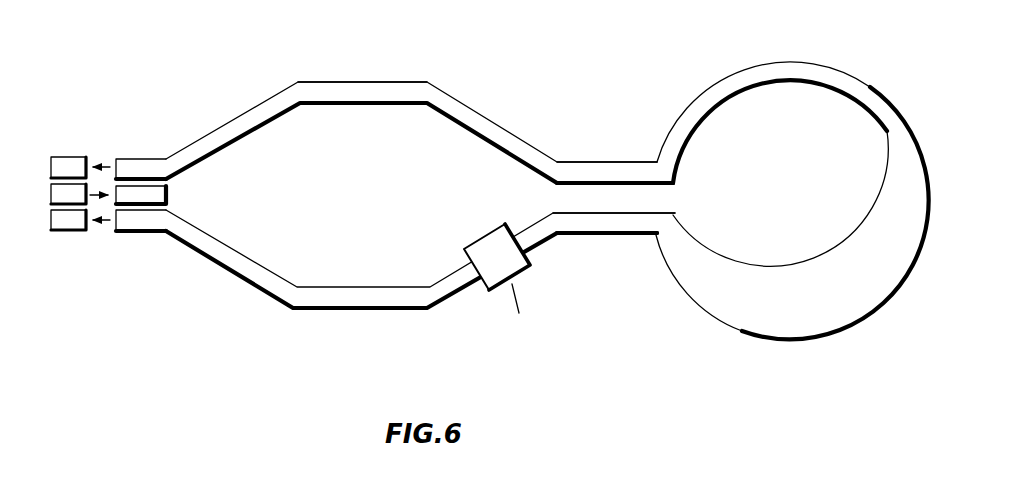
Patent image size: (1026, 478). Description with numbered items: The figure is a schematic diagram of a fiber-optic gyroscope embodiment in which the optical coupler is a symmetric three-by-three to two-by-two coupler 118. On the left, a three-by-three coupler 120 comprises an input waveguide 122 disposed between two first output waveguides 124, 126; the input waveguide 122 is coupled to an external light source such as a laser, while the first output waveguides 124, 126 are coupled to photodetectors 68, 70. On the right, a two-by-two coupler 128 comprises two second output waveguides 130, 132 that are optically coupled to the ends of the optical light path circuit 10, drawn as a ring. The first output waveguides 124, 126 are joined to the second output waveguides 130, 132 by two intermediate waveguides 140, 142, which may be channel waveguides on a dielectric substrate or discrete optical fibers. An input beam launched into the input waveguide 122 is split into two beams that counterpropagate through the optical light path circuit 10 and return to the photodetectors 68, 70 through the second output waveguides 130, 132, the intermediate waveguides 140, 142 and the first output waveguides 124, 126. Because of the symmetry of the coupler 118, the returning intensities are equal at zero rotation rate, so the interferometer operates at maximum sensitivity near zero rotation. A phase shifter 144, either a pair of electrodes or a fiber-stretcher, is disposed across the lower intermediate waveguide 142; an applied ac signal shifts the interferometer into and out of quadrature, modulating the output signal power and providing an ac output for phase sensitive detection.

The optical light path circuit 10 is at (50, 194).
The photodetector 68 is at (61, 156).
The photodetector 70 is at (72, 232).
The (3×3)-(2×2) coupler 118 is at (419, 96).
The (3×3) coupler 120 is at (170, 177).
The input waveguide 122 is at (168, 193).
The first output waveguide 124 is at (130, 157).
The first output waveguide 126 is at (136, 233).
The (2×2) coupler 128 is at (614, 173).
The second output waveguide 130 is at (613, 141).
The second output waveguide 132 is at (609, 235).
The intermediate waveguide 140 is at (410, 82).
The intermediate waveguide 142 is at (350, 310).
The phase shifter 144 is at (483, 238).